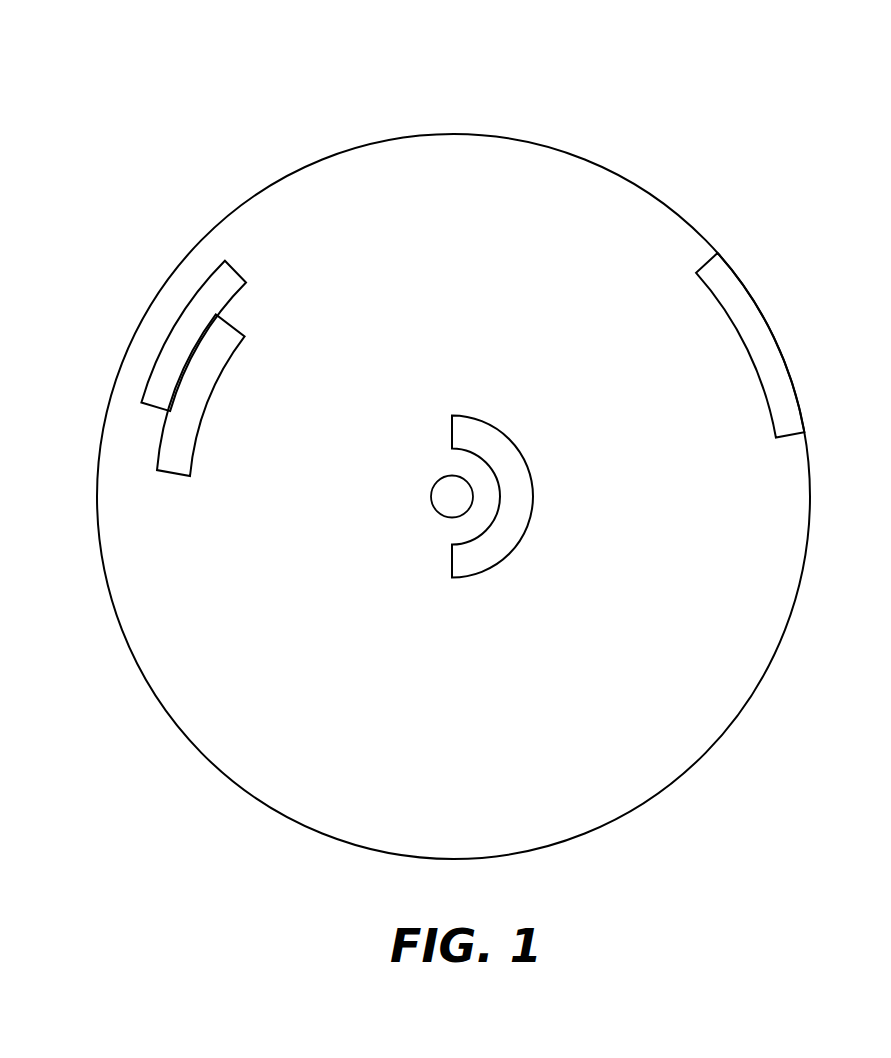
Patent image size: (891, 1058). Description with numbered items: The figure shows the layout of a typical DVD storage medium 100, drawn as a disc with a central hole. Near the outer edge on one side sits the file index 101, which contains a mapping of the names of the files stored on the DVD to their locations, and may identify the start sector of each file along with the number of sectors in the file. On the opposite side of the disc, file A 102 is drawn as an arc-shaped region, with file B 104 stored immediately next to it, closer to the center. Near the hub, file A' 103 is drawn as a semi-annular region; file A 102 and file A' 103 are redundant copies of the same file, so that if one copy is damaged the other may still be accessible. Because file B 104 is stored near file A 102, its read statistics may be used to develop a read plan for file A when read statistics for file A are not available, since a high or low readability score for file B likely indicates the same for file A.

The DVD storage medium 100 is at (712, 150).
The file index 101 is at (773, 340).
The file A 102 is at (172, 328).
The file A' 103 is at (517, 552).
The file B 104 is at (210, 398).